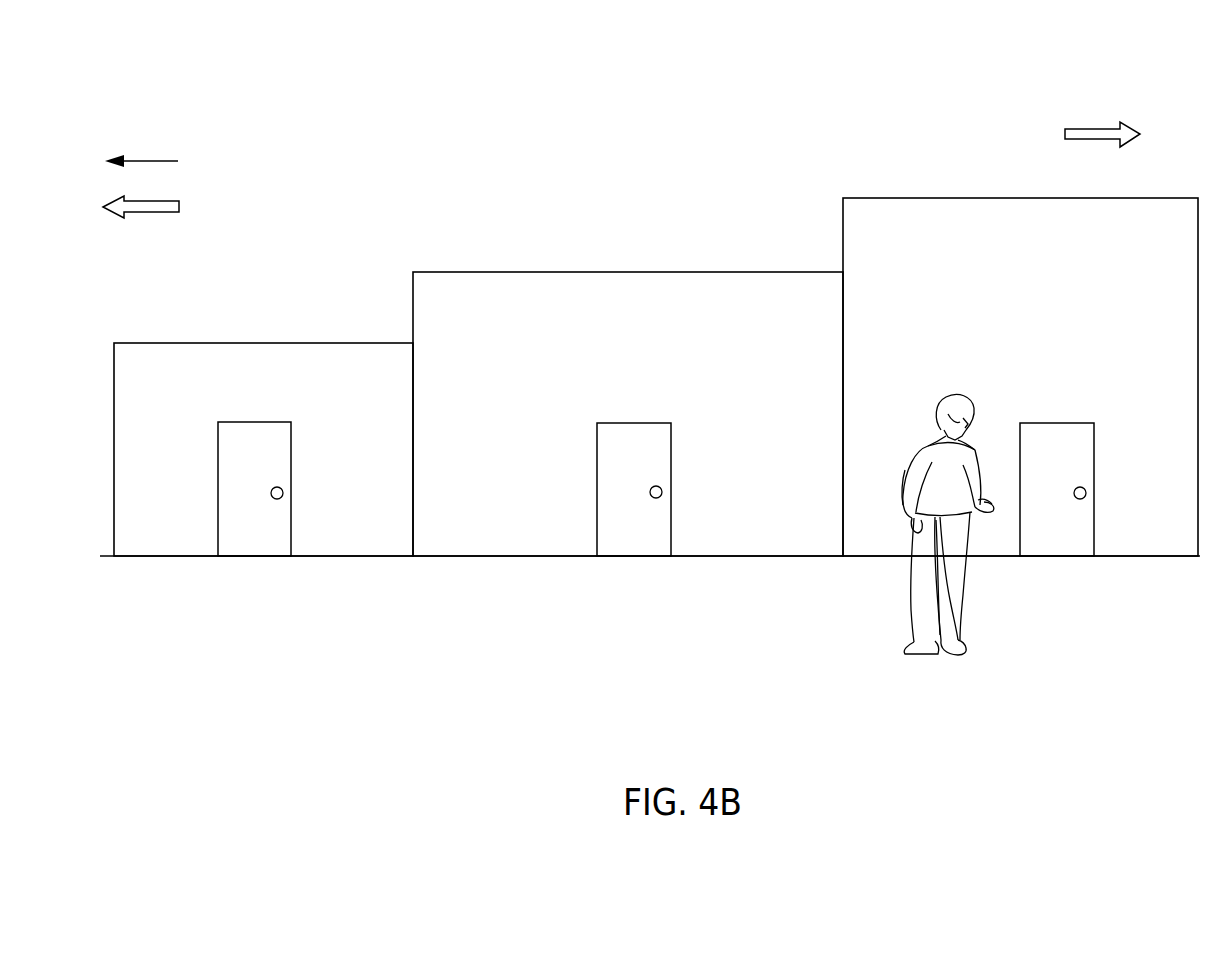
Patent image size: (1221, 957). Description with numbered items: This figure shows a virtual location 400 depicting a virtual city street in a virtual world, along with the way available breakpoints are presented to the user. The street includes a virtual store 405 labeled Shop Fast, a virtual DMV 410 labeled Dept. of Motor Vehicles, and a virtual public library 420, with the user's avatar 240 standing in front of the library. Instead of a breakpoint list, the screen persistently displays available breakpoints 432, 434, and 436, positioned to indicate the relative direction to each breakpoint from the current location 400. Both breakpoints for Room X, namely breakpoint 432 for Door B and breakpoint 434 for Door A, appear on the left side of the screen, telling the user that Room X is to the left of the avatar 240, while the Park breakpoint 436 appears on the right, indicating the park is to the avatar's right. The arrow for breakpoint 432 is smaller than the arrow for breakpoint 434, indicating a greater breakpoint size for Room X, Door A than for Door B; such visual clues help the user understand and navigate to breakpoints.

The virtual location 400 is at (372, 62).
The avatar 240 is at (945, 400).
The virtual store 405 is at (336, 542).
The virtual DMV 410 is at (527, 542).
The virtual public library 420 is at (1151, 530).
The available breakpoint 432 is at (381, 160).
The available breakpoint 434 is at (381, 207).
The available breakpoint 436 is at (976, 133).